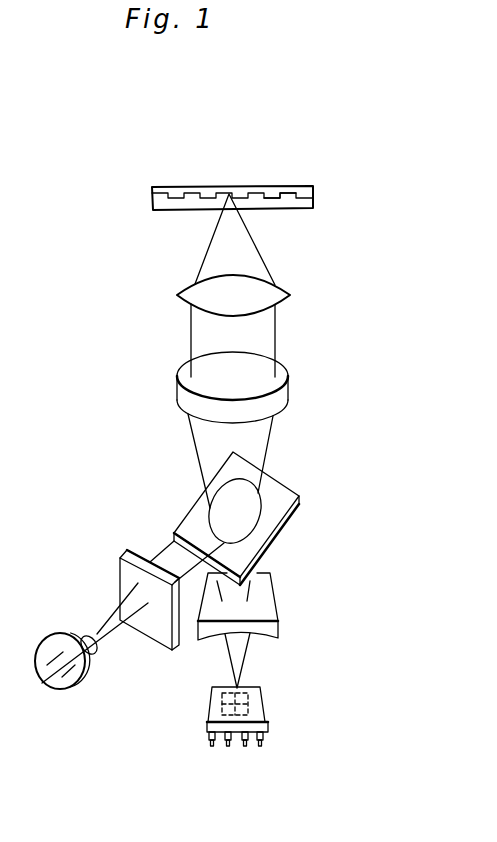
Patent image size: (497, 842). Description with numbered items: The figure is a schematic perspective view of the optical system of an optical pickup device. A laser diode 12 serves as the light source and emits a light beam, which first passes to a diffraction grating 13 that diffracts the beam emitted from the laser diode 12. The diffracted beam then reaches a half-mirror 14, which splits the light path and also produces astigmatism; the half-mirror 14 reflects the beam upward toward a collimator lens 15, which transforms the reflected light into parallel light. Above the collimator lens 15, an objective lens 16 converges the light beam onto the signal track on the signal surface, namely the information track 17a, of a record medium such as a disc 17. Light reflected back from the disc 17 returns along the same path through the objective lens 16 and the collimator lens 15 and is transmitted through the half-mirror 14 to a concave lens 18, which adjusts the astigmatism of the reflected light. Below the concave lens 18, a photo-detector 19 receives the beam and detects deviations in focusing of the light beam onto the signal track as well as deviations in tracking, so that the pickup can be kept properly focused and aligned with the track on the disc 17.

The laser diode 12 is at (58, 632).
The diffraction grating 13 is at (120, 557).
The half-mirror 14 is at (299, 504).
The collimator lens 15 is at (288, 395).
The objective lens 16 is at (289, 296).
The disc 17 is at (172, 188).
The information track 17a is at (277, 198).
The concave lens 18 is at (280, 628).
The photo-detector 19 is at (268, 712).